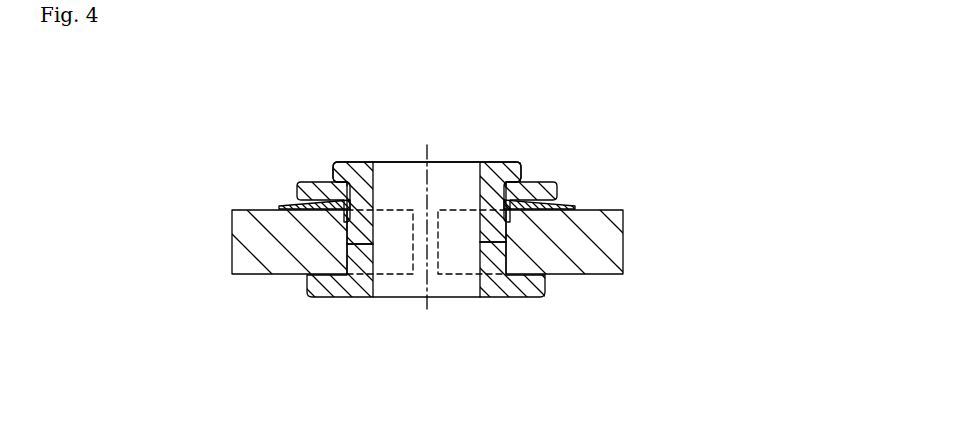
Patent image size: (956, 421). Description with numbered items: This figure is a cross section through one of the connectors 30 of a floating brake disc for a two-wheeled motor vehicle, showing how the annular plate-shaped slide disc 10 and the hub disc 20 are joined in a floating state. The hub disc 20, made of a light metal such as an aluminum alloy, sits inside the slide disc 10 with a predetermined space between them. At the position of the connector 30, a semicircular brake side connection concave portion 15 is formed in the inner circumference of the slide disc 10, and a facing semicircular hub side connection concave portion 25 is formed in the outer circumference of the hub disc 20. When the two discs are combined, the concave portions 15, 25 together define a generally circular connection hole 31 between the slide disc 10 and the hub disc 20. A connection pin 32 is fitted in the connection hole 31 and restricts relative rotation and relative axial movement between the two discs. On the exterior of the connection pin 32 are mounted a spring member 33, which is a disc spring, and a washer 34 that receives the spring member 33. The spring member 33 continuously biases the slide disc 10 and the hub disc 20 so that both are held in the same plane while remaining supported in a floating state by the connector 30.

The slide disc 10 is at (253, 276).
The hub disc 20 is at (600, 276).
The connector 30 is at (517, 132).
The connection hole 31 is at (473, 348).
The connection pin 32 is at (340, 158).
The spring member 33 is at (569, 205).
The washer 34 is at (549, 184).
The brake side connection concave portion 15 is at (373, 244).
The hub side connection concave portion 25 is at (480, 242).